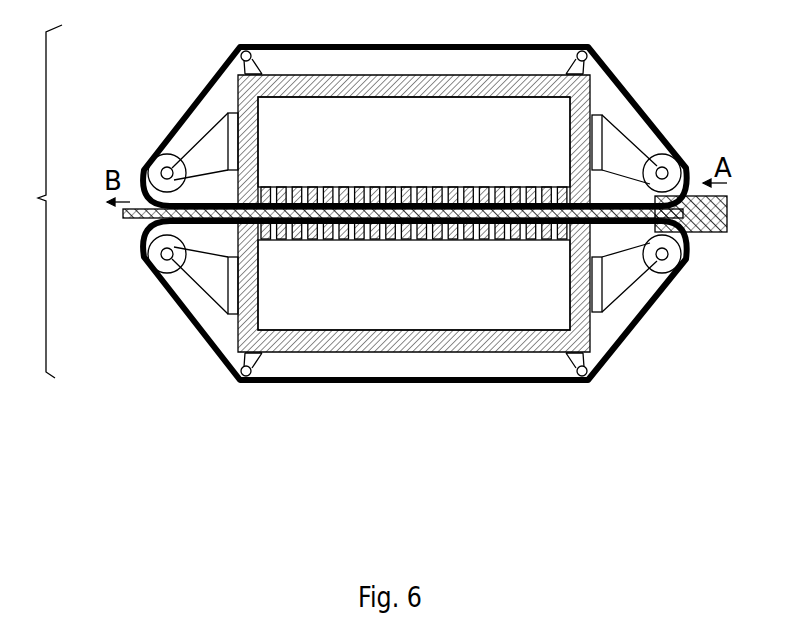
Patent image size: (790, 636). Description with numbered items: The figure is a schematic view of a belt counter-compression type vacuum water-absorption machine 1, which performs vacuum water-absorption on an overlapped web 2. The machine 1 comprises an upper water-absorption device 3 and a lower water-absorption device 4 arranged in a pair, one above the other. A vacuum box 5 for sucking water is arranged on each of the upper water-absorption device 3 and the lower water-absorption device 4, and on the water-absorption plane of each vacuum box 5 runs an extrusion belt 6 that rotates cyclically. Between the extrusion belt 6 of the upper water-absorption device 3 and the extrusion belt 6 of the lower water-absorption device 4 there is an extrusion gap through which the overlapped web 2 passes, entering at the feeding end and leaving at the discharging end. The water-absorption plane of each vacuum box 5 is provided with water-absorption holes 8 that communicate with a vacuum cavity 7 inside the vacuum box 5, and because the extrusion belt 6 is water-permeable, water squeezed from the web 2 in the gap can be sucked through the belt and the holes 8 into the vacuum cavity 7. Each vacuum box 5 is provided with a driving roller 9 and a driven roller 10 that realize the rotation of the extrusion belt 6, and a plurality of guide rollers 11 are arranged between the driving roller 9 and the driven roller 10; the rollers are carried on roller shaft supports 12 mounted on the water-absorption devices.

The belt counter-compression type vacuum water-absorption machine 1 is at (37, 201).
The overlapped web 2 is at (713, 230).
The upper water-absorption device 3 is at (172, 78).
The lower water-absorption device 4 is at (150, 310).
The vacuum box 5 is at (335, 333).
The extrusion belt 6 is at (638, 103).
The vacuum cavity 7 is at (397, 290).
The water-absorption hole 8 is at (447, 228).
The driving roller 9 is at (673, 283).
The driven roller 10 is at (168, 295).
The guide roller 11 is at (243, 350).
The roller shaft support 12 is at (610, 280).